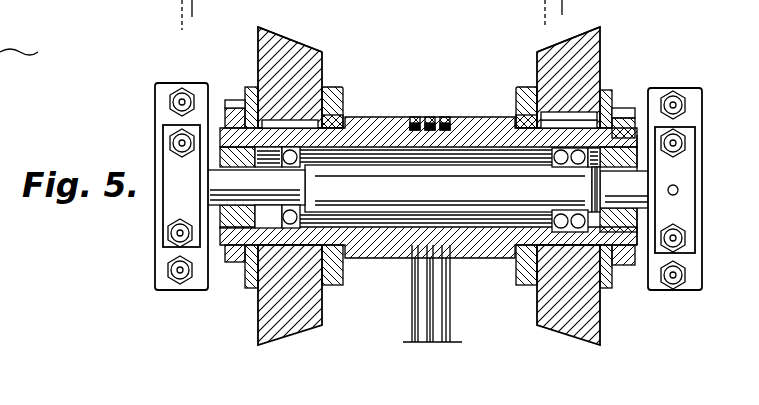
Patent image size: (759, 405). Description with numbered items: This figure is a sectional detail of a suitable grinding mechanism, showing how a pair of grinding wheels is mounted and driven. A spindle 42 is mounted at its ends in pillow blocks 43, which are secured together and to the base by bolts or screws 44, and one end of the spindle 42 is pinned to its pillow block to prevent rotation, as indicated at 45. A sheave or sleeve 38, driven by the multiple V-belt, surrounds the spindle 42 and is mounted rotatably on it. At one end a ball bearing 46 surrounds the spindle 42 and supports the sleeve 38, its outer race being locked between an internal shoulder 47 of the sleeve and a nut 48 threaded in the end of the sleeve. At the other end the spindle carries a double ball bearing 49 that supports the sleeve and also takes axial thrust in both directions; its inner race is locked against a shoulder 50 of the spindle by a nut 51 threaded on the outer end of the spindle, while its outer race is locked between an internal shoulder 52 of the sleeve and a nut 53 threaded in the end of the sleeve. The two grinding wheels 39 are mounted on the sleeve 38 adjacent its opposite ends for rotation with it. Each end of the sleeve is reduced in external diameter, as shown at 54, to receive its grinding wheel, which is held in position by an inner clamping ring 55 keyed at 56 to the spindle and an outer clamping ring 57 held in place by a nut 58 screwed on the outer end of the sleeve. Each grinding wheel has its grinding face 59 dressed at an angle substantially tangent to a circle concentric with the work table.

The sleeve 38 is at (466, 126).
The grinding wheels 39 is at (313, 70).
The spindle 42 is at (370, 168).
The pillow blocks 43 is at (165, 127).
The bolts 44 is at (183, 98).
The pin 45 is at (679, 190).
The ball bearing 46 is at (288, 147).
The internal shoulder 47 is at (292, 148).
The nut 48 is at (243, 96).
The double ball bearing 49 is at (616, 104).
The shoulder 50 is at (552, 168).
The nut 51 is at (592, 175).
The internal shoulder 52 is at (582, 114).
The nut 53 is at (610, 118).
The reduced end 54 is at (280, 112).
The inner clamping ring 55 is at (338, 98).
The key 56 is at (347, 115).
The outer clamping ring 57 is at (250, 88).
The nut 58 is at (240, 100).
The grinding face 59 is at (306, 55).